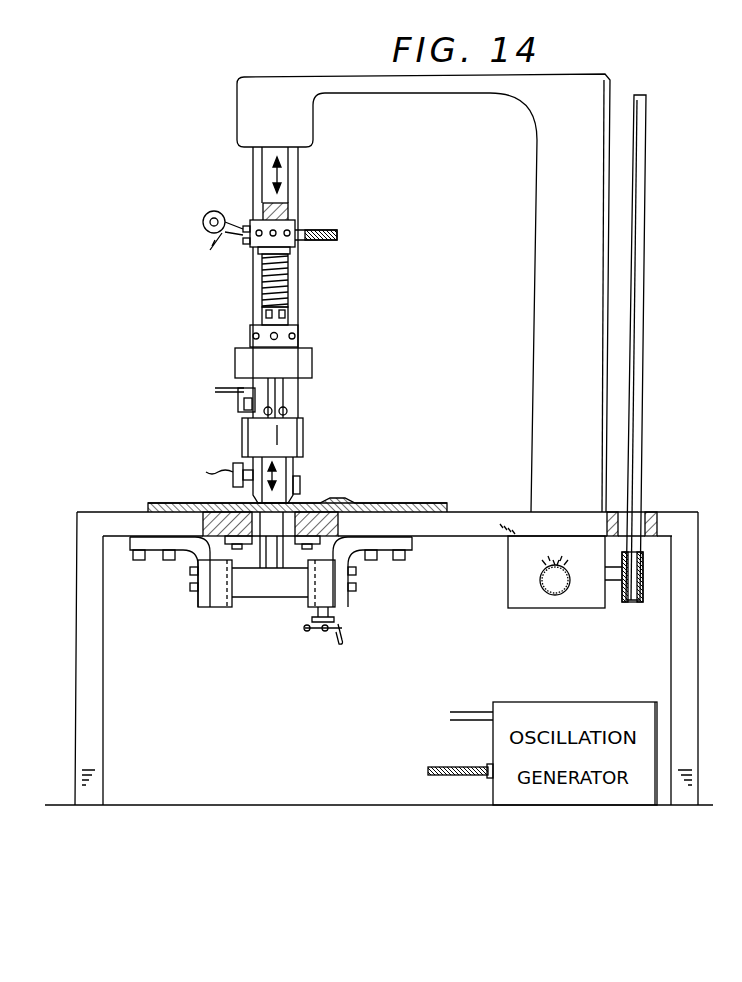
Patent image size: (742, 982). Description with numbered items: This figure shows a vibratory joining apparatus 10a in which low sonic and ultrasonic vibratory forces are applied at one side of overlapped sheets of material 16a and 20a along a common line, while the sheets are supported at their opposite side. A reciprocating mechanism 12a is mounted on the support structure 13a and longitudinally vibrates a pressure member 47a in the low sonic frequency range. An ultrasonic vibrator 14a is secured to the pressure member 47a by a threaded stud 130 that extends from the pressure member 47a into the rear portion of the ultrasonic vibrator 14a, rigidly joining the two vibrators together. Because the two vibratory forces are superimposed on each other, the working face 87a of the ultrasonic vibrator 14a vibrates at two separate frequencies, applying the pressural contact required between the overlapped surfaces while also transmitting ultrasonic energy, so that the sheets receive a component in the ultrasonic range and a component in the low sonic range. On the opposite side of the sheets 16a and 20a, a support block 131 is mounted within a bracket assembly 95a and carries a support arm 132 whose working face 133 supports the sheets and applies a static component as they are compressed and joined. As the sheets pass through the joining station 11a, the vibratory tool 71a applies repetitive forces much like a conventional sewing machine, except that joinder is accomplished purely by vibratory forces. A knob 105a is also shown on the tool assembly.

The vibratory joining apparatus 10a is at (230, 124).
The reciprocating mechanism 12a is at (494, 104).
The pressure member 47a is at (299, 160).
The threaded stud 130 is at (289, 216).
The ultrasonic vibrator 14a is at (298, 288).
The vibratory tool 71a is at (304, 438).
The joining station 11a is at (295, 480).
The locking knob 105a is at (238, 462).
The sheet of material 16a is at (447, 511).
The support structure 13a is at (706, 552).
The sheet of material 20a is at (148, 505).
The working face 133 is at (256, 507).
The working face 87a is at (286, 504).
The support arm 132 is at (275, 548).
The support block 131 is at (248, 599).
The bracket assembly 95a is at (350, 602).